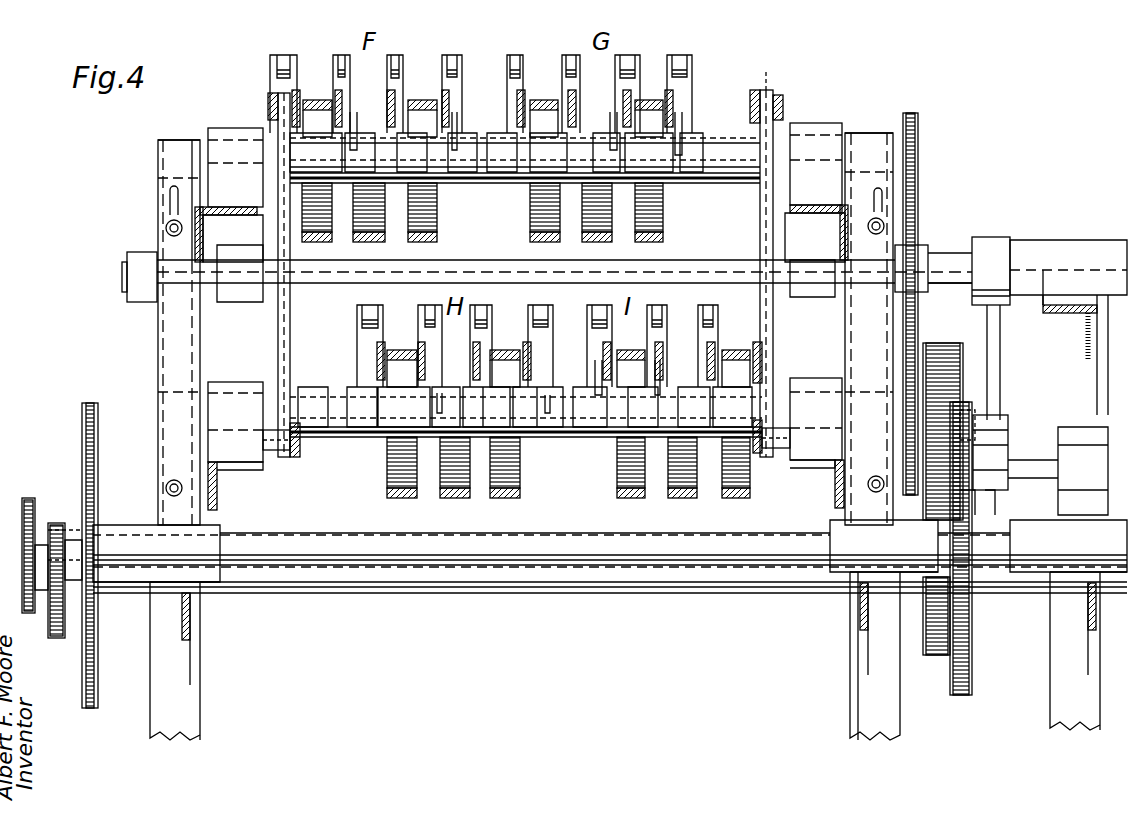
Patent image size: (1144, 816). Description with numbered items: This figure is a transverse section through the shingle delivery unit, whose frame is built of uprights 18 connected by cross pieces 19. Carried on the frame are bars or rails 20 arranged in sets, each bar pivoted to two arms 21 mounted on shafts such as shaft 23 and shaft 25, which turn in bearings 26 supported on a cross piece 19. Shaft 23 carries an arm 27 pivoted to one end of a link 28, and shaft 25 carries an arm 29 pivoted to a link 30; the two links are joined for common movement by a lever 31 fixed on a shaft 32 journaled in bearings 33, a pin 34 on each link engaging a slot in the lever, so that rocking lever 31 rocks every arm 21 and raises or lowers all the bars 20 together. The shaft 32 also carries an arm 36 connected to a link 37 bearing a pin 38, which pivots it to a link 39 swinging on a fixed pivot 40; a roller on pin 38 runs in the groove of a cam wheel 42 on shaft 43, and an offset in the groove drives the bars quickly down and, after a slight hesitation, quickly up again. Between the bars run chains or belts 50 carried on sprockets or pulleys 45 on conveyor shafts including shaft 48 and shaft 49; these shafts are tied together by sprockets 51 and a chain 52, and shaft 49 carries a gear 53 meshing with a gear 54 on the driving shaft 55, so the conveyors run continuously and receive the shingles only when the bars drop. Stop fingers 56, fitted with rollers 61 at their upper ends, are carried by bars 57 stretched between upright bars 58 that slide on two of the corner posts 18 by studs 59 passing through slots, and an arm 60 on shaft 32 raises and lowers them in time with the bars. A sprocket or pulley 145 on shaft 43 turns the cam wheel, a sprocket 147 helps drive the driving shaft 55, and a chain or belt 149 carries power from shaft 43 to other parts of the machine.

The uprights 18 is at (185, 690).
The cross pieces 19 is at (245, 215).
The bars or rails 20 is at (336, 92).
The arms 21 is at (340, 120).
The shaft 23 is at (717, 143).
The shaft 25 is at (520, 408).
The bearings 26 is at (226, 135).
The arm 27 is at (772, 85).
The link 28 is at (755, 90).
The arm 29 is at (300, 448).
The link 30 is at (295, 457).
The lever 31 is at (278, 347).
The shaft 32 is at (472, 283).
The bearings 33 is at (238, 302).
The pin 34 is at (268, 105).
The arm 36 is at (972, 297).
The link 37 is at (1000, 336).
The pin 38 is at (990, 408).
The link 39 is at (996, 482).
The fixed pivot 40 is at (1025, 462).
The cam wheel 42 is at (968, 692).
The shaft 43 is at (632, 560).
The sprockets or pulleys 45 is at (385, 210).
The shaft 48 is at (718, 183).
The shaft 49 is at (585, 437).
The chains or belts 50 is at (360, 108).
The sprockets 51 is at (918, 130).
The chain 52 is at (918, 220).
The gear 53 is at (942, 348).
The gear 54 is at (930, 655).
The driving shaft 55 is at (522, 593).
The stop fingers 56 is at (338, 65).
The bars 57 is at (196, 145).
The upright bars 58 is at (170, 195).
The studs 59 is at (166, 228).
The arm 60 is at (135, 258).
The rollers 61 is at (344, 55).
The sprocket or pulley 145 is at (86, 440).
The pulley or sprocket 147 is at (56, 523).
The chain or belt 149 is at (24, 498).